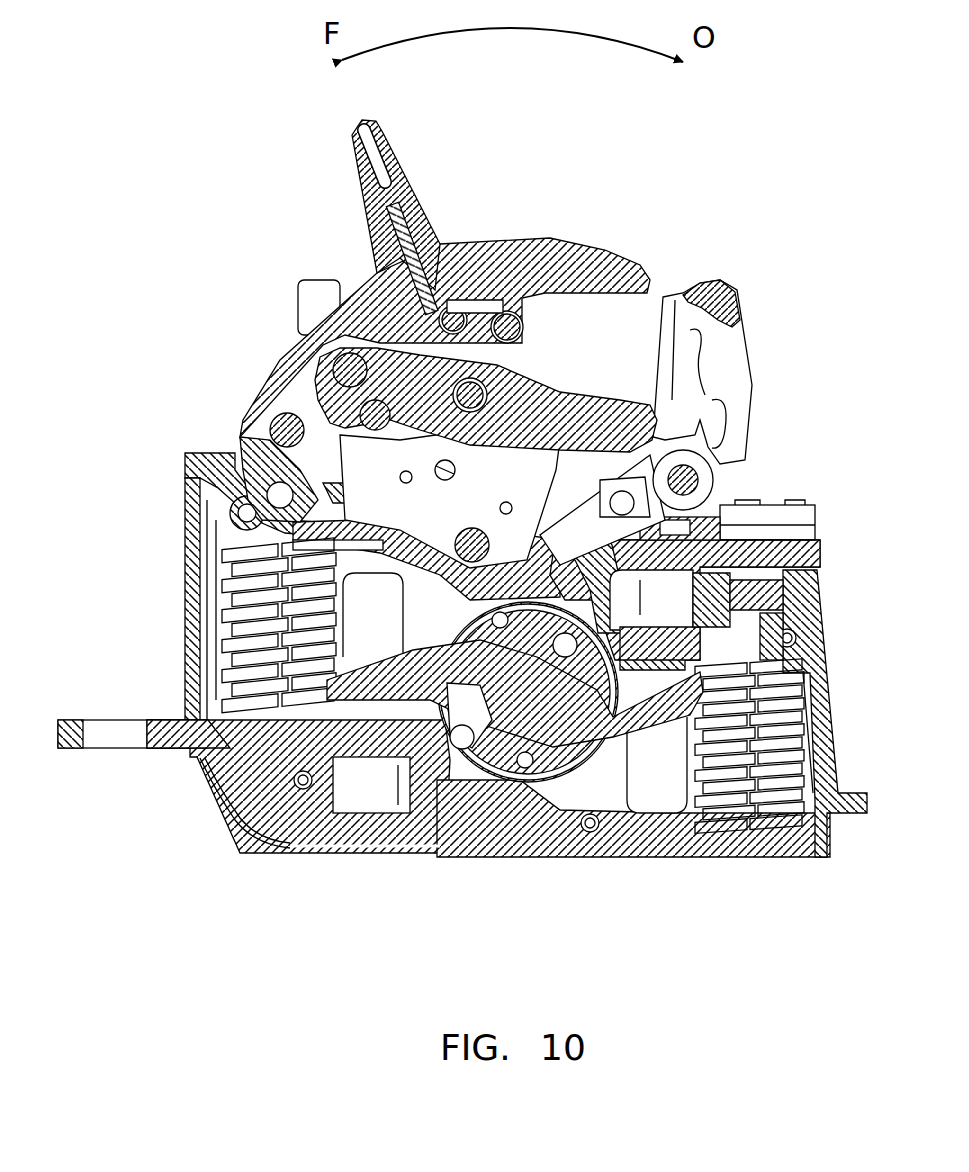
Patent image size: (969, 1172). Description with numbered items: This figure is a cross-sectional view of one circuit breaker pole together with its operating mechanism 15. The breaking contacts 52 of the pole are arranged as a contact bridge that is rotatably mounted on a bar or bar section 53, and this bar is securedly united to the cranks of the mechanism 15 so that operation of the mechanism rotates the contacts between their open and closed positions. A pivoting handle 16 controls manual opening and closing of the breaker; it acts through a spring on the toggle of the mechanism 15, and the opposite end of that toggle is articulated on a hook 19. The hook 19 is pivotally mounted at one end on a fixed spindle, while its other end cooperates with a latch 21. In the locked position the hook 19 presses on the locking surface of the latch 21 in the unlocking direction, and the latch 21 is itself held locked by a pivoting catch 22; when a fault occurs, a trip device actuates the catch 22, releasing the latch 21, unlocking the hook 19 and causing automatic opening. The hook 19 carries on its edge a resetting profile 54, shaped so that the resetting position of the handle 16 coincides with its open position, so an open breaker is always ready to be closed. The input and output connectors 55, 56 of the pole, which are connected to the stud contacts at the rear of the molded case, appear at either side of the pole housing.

The opening and closing mechanism 15 is at (668, 273).
The pivoting handle 16 is at (396, 128).
The hook 19 is at (525, 400).
The latch 21 is at (683, 290).
The pivoting catch 22 is at (733, 360).
The movable contacts 52 is at (597, 722).
The bar 53 is at (488, 775).
The resetting profile 54 is at (591, 385).
The input connector 55 is at (775, 560).
The output connector 56 is at (163, 740).